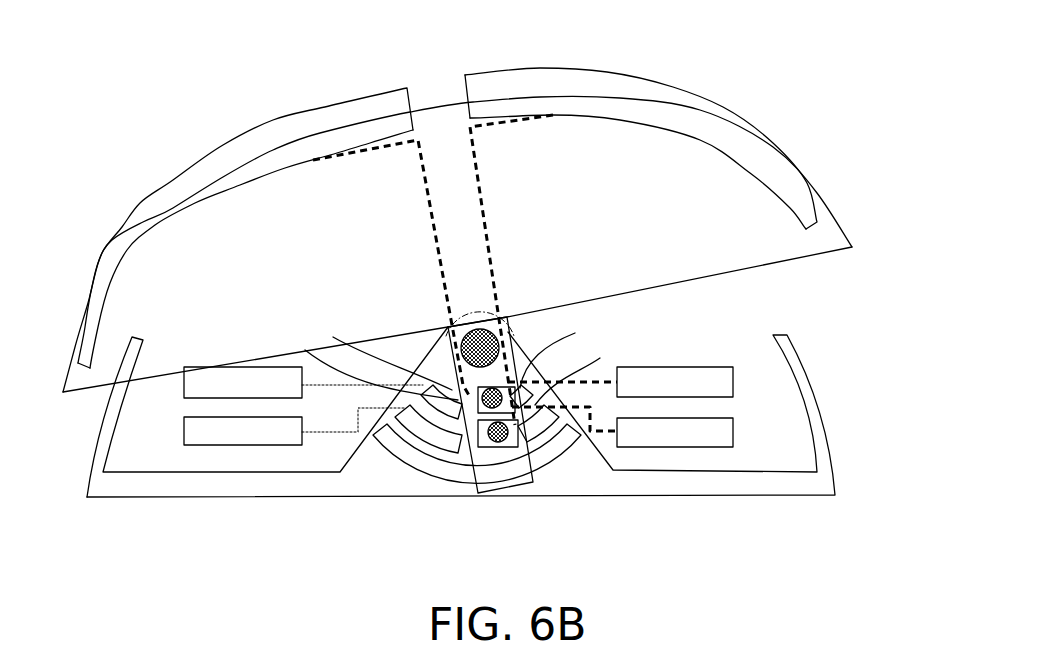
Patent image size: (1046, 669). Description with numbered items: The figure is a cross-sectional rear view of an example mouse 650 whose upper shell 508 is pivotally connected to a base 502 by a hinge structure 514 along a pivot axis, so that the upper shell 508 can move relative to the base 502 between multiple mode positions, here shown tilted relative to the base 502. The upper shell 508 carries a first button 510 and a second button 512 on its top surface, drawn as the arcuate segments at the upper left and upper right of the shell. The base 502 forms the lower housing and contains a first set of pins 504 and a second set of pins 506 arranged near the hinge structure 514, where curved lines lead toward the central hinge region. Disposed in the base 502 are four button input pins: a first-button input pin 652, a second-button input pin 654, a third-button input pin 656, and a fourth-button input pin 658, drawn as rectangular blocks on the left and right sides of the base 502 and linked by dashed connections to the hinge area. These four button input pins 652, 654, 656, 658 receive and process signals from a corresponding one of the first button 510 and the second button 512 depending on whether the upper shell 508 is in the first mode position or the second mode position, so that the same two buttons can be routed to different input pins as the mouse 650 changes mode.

The base 502 is at (833, 466).
The first set of pins 504 is at (333, 337).
The second set of pins 506 is at (575, 333).
The upper shell 508 is at (822, 197).
The first button 510 is at (163, 187).
The second button 512 is at (693, 84).
The hinge structure 514 is at (518, 333).
The mouse 650 is at (713, 550).
The first-button input pin 652 is at (725, 367).
The second-button input pin 654 is at (733, 420).
The third-button input pin 656 is at (192, 367).
The fourth-button input pin 658 is at (184, 427).